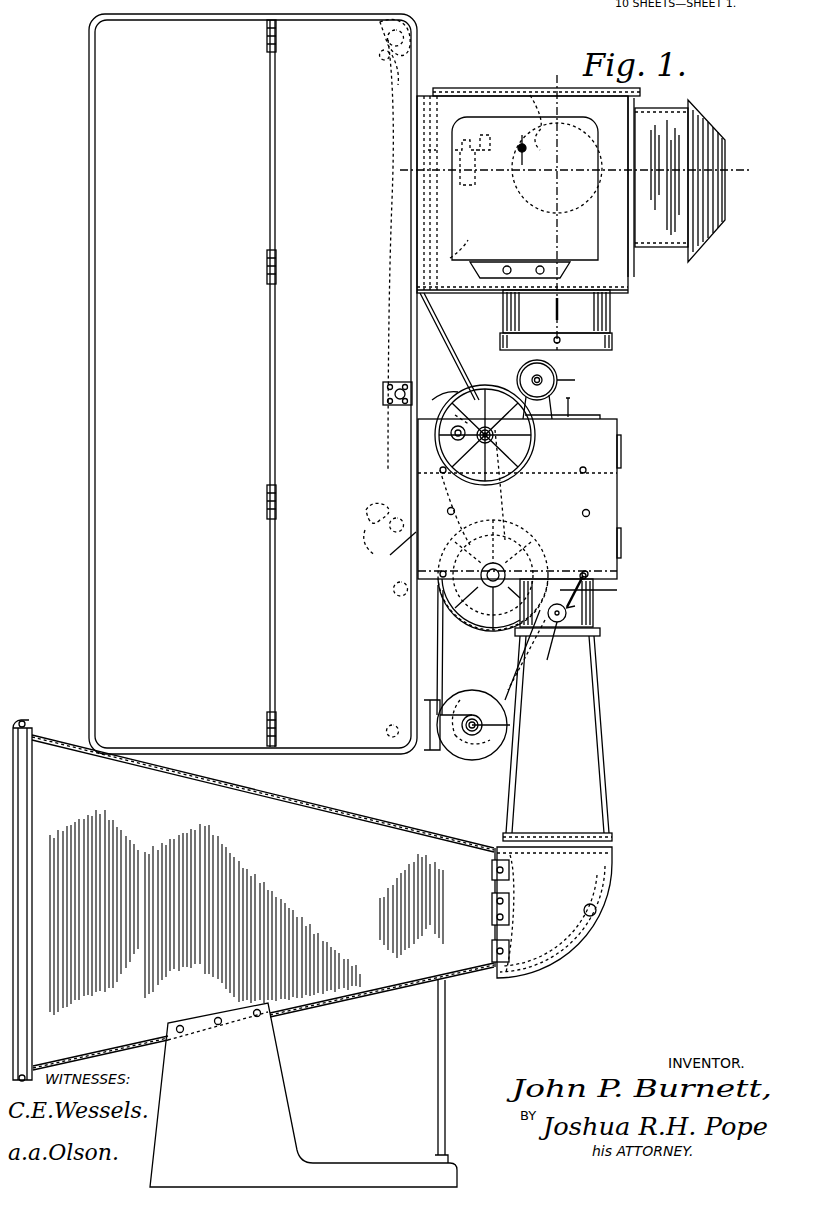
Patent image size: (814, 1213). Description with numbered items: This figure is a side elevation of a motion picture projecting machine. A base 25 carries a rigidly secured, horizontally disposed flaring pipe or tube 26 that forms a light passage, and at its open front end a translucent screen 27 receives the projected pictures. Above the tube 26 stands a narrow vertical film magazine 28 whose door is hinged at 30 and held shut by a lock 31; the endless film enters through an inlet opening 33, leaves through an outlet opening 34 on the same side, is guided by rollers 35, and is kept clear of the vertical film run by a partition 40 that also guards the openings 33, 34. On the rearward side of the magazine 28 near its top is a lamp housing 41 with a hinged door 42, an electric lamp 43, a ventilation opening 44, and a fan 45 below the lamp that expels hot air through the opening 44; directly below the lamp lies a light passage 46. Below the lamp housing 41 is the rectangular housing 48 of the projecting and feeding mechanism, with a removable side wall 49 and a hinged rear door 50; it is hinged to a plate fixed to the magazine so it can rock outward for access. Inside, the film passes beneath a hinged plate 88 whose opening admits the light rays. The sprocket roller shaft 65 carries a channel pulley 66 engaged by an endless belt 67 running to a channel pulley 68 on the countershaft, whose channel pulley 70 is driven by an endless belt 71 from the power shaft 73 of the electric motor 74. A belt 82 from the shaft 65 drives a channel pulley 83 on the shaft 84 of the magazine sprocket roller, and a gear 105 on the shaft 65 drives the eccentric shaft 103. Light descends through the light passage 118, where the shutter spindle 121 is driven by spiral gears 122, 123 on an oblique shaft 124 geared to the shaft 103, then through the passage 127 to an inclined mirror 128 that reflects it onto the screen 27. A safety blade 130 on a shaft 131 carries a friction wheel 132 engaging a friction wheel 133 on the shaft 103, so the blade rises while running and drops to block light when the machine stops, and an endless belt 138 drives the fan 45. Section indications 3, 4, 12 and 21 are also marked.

The section line 3 is at (733, 140).
The section line 4 is at (560, 82).
The frame 12 is at (585, 412).
The support 21 is at (370, 440).
The base 25 is at (286, 1148).
The flaring pipe or tube 26 is at (388, 990).
The screen 27 is at (22, 724).
The film magazine 28 is at (92, 598).
The hinge 30 is at (278, 38).
The lock 31 is at (386, 384).
The inlet opening 33 is at (390, 537).
The outlet opening 34 is at (412, 574).
The guide rollers 35 is at (381, 725).
The partition 40 is at (388, 462).
The lamp housing 41 is at (622, 276).
The hinged door 42 is at (585, 218).
The electric lamp 43 is at (530, 95).
The ventilation opening 44 is at (688, 100).
The fan 45 is at (466, 250).
The light passage 46 is at (590, 324).
The housing 48 is at (605, 432).
The removable side wall 49 is at (600, 510).
The hinged rear door 50 is at (619, 480).
The shaft 65 is at (451, 433).
The channel pulley 66 is at (436, 395).
The endless belt 67 is at (506, 508).
The channel pulley 68 is at (502, 600).
The channel pulley 70 is at (540, 540).
The endless belt 71 is at (446, 648).
The power shaft 73 is at (470, 735).
The electric motor 74 is at (495, 752).
The endless belt 82 is at (418, 82).
The channel pulley 83 is at (414, 66).
The shaft 84 is at (414, 42).
The plate 88 is at (572, 416).
The shaft 103 is at (494, 436).
The gear 105 is at (460, 410).
The light passage 118 is at (590, 588).
The spindle 121 is at (556, 640).
The spiral gear 122 is at (600, 631).
The spiral gear 123 is at (576, 606).
The obliquely disposed shaft 124 is at (600, 592).
The passage 127 is at (578, 744).
The inclined mirror 128 is at (590, 930).
The blade 130 is at (577, 378).
The shaft 131 is at (540, 380).
The friction wheel 132 is at (545, 388).
The friction wheel 133 is at (510, 392).
The endless belt 138 is at (426, 318).